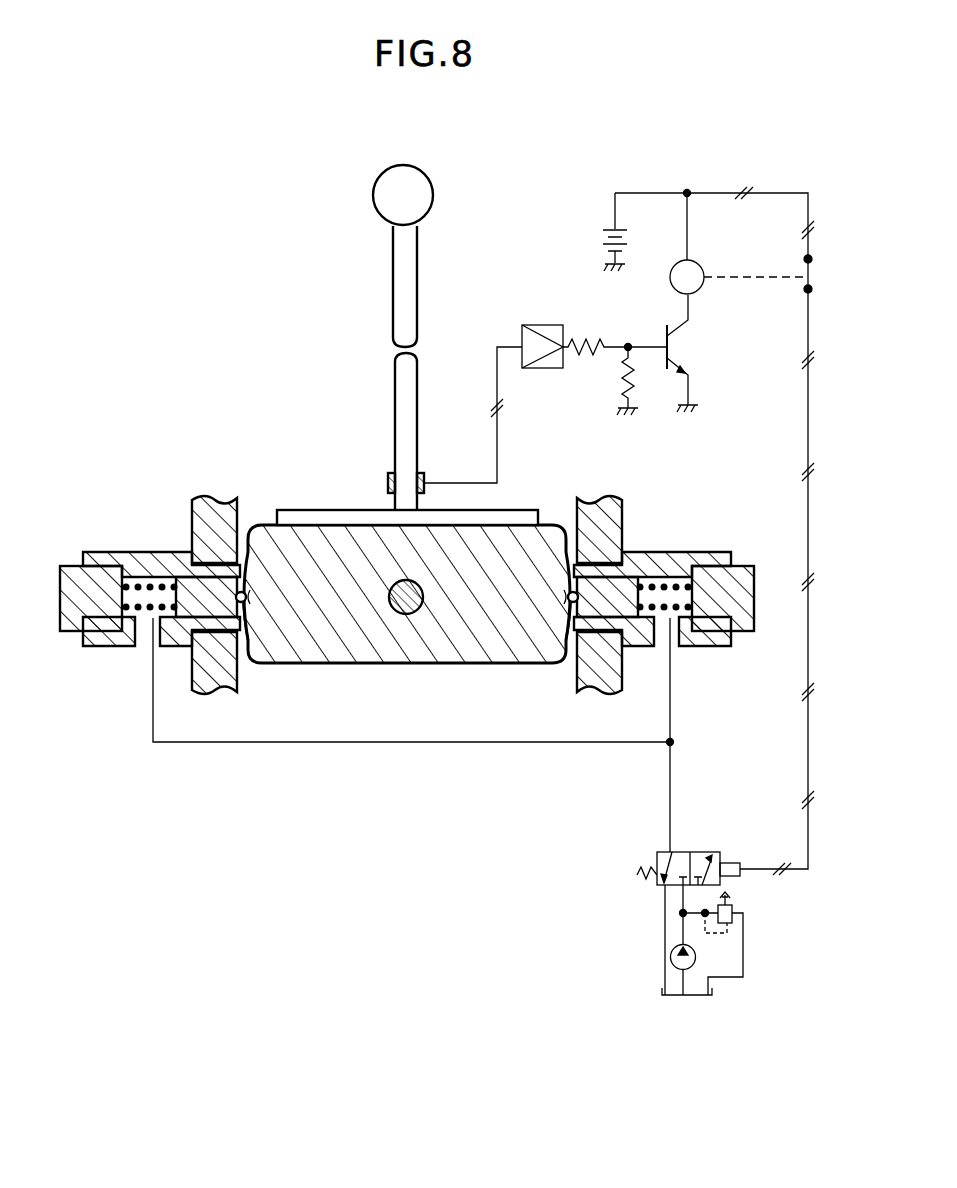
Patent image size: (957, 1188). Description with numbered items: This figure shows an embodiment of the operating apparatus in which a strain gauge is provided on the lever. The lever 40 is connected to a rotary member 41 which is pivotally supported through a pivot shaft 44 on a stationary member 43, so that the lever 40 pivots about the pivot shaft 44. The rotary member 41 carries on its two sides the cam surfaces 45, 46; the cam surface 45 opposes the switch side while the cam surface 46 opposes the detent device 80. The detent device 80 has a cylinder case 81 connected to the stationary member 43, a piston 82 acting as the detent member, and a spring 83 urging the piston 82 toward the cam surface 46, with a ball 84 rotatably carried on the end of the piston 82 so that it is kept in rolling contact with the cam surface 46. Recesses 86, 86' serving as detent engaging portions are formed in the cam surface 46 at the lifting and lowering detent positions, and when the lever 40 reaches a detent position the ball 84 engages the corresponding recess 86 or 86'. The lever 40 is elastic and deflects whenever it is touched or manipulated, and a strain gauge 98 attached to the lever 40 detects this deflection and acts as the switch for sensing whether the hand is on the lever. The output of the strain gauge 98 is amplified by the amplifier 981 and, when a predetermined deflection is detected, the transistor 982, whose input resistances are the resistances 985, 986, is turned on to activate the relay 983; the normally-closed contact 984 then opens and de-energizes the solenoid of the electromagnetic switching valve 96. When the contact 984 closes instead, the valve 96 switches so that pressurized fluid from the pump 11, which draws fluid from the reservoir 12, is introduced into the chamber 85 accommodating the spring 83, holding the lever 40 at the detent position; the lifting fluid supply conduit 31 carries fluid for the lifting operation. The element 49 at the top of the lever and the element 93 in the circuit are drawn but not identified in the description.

The pump 11 is at (697, 958).
The reservoir 12 is at (658, 990).
The lifting fluid supply conduit 31 is at (310, 660).
The lever 40 is at (393, 292).
The rotary member 41 is at (460, 515).
The stationary member 43 is at (198, 512).
The pivot shaft 44 is at (406, 614).
The cam surface 45 is at (243, 640).
The cam surface 46 is at (565, 628).
The knob 49 is at (430, 192).
The detent device 80 is at (85, 552).
The cylinder case 81 is at (105, 553).
The piston 82 is at (185, 642).
The spring 83 is at (162, 590).
The ball 84 is at (565, 597).
The chamber 85 is at (150, 614).
The recess 86 is at (407, 594).
The recess 86' is at (413, 592).
The battery 93 is at (603, 237).
The electromagnetic switching valve 96 is at (712, 855).
The strain gauge 98 is at (390, 473).
The amplifier 981 is at (540, 325).
The transistor 982 is at (688, 350).
The relay 983 is at (708, 270).
The normally-closed contact 984 is at (803, 289).
The input resistance 985 is at (607, 345).
The input resistance 986 is at (618, 380).